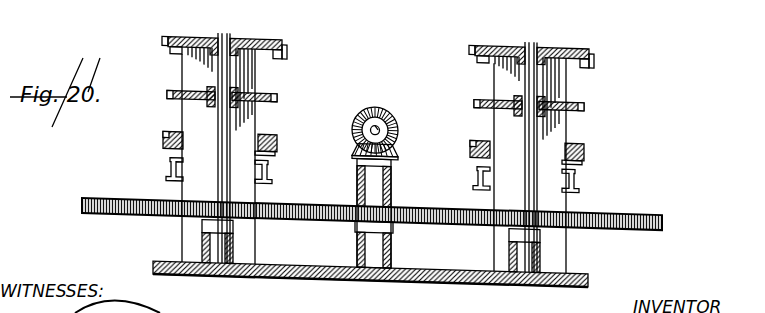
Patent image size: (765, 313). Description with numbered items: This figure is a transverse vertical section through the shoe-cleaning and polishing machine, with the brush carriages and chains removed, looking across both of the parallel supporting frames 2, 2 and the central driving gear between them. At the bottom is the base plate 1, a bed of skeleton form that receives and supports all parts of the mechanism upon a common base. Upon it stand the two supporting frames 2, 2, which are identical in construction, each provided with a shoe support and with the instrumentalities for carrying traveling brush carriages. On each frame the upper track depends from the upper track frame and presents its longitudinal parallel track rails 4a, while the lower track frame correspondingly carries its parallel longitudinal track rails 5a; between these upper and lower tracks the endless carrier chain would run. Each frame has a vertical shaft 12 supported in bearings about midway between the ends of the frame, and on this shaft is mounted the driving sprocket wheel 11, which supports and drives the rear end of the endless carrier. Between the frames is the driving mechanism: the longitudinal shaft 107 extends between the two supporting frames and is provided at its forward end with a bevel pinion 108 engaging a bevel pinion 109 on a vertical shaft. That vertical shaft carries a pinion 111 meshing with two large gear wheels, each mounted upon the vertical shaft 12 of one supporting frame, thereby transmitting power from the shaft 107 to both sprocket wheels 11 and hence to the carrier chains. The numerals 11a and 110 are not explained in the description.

The base plate 1 is at (333, 266).
The supporting frame 2 is at (185, 188).
The parallel track rail 4a is at (178, 31).
The parallel longitudinal track rail 5a is at (163, 142).
The sprocket wheel 11 is at (178, 97).
The rack bar 11a is at (118, 212).
The vertical shaft 12 is at (217, 67).
The longitudinal shaft 107 is at (393, 105).
The bevel pinion 108 is at (373, 98).
The bevel pinion 109 is at (357, 142).
The column 110 is at (392, 180).
The pinion 111 is at (357, 213).